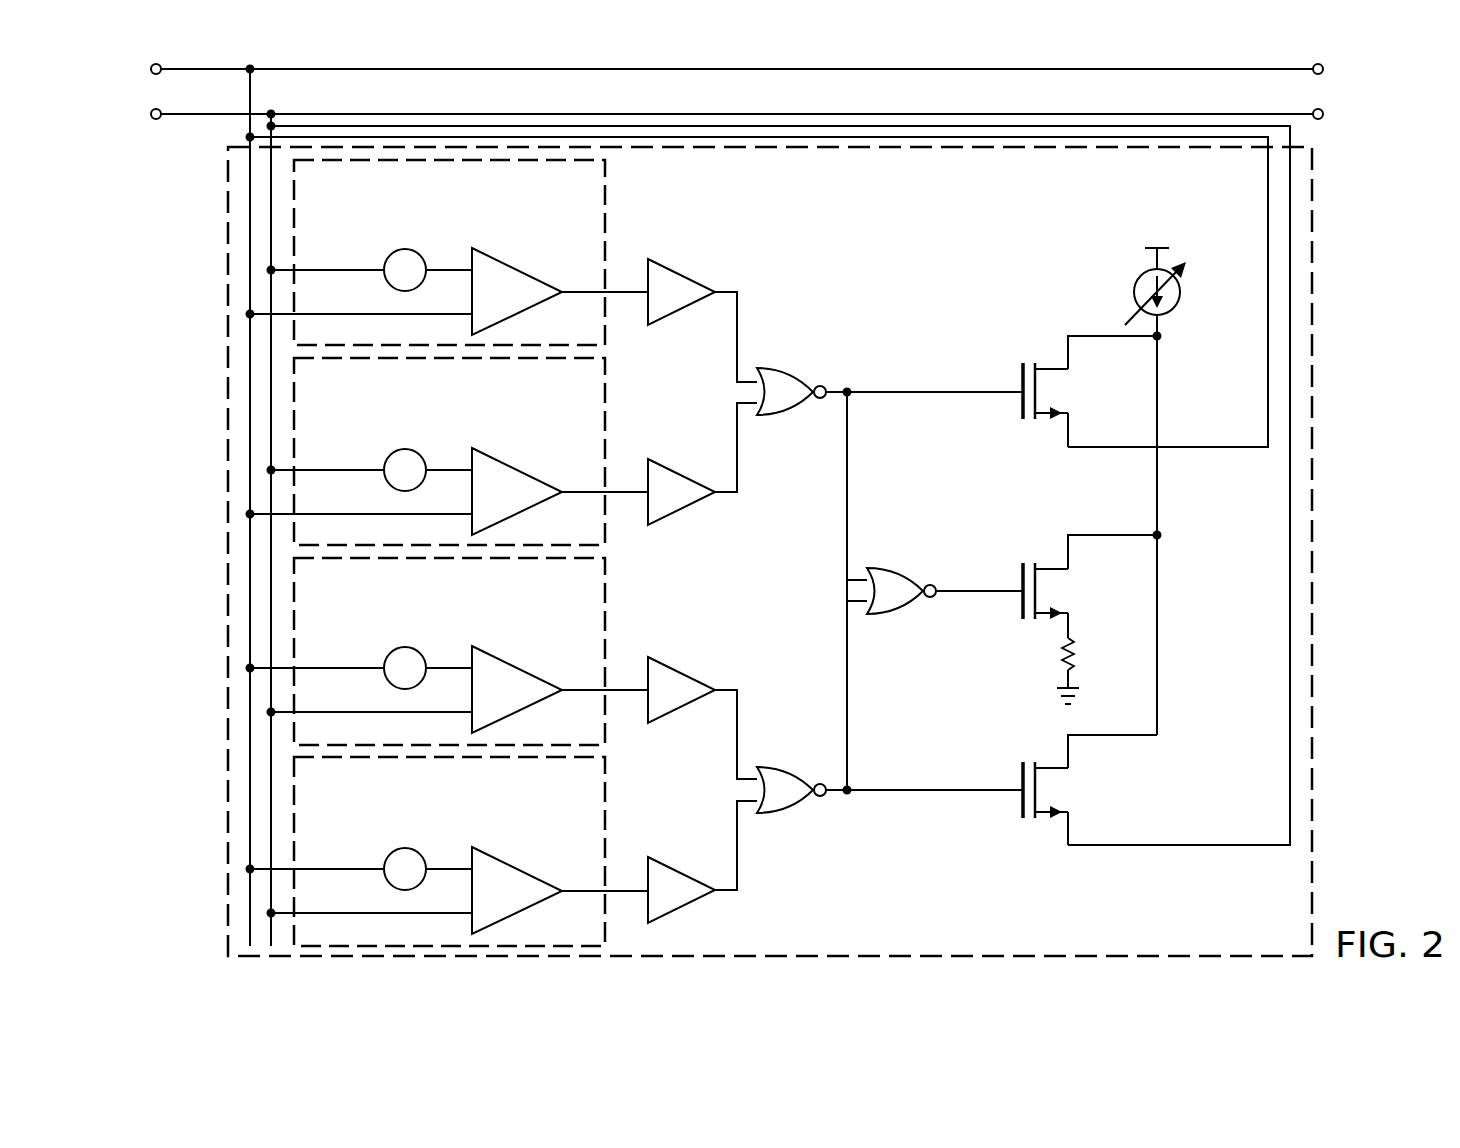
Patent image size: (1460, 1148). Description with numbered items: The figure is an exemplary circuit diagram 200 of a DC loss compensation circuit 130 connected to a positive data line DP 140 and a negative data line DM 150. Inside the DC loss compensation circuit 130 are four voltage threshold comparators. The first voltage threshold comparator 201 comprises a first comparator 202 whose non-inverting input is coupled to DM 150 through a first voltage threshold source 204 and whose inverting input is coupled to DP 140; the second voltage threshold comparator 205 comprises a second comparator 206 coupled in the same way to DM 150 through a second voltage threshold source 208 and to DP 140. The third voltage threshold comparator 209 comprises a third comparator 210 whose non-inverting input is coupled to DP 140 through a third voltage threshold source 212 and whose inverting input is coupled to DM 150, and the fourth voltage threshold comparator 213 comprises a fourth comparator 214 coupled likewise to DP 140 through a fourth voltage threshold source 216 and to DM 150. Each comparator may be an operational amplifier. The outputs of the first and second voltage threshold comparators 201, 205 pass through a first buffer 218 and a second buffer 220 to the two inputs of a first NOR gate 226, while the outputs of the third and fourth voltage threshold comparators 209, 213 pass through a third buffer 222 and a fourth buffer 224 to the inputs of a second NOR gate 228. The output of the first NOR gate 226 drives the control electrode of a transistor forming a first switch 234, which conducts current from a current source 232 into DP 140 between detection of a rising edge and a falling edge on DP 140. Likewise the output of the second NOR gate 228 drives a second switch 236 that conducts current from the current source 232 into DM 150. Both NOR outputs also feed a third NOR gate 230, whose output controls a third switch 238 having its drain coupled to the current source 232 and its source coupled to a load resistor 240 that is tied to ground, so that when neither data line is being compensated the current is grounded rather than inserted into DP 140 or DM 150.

The DC loss compensation circuit 130 is at (220, 579).
The DP 140 is at (160, 80).
The DM 150 is at (205, 118).
The circuit diagram 200 is at (1388, 112).
The first voltage threshold comparator 201 is at (614, 211).
The first comparator 202 is at (526, 274).
The first voltage threshold source 204 is at (386, 262).
The second voltage threshold comparator 205 is at (614, 411).
The second comparator 206 is at (526, 474).
The second voltage threshold source 208 is at (386, 462).
The third voltage threshold comparator 209 is at (614, 609).
The third comparator 210 is at (526, 672).
The third voltage threshold source 212 is at (386, 660).
The fourth voltage threshold comparator 213 is at (614, 809).
The fourth comparator 214 is at (526, 873).
The fourth voltage threshold source 216 is at (386, 861).
The first buffer 218 is at (684, 276).
The second buffer 220 is at (684, 476).
The third buffer 222 is at (684, 707).
The fourth buffer 224 is at (684, 907).
The first NOR gate 226 is at (780, 368).
The second NOR gate 228 is at (782, 814).
The third NOR gate 230 is at (893, 616).
The current source 232 is at (1181, 291).
The first switch 234 is at (1020, 382).
The second switch 236 is at (1020, 800).
The third switch 238 is at (1020, 600).
The load resistor 240 is at (1077, 656).